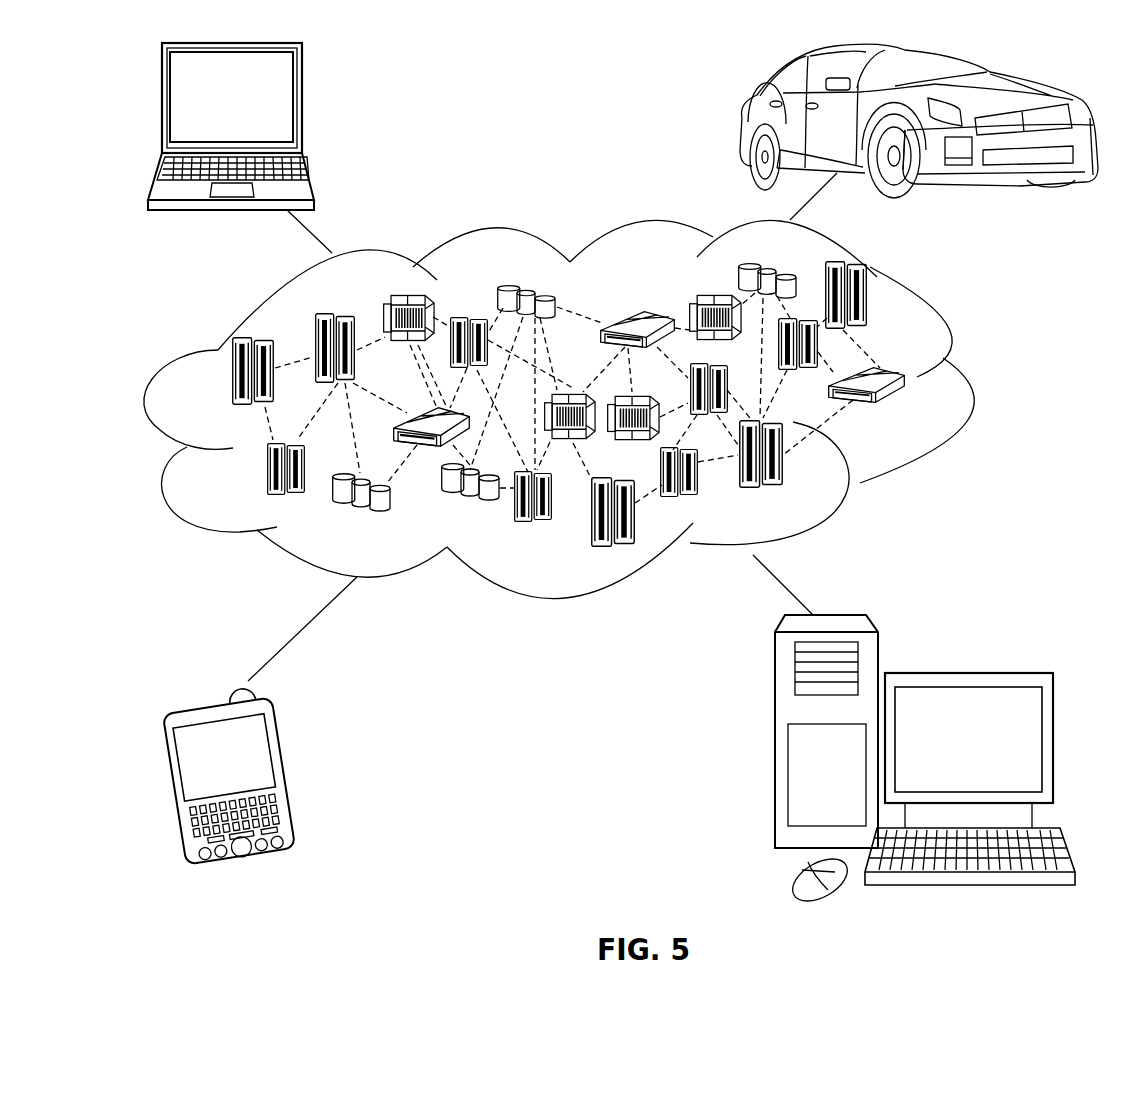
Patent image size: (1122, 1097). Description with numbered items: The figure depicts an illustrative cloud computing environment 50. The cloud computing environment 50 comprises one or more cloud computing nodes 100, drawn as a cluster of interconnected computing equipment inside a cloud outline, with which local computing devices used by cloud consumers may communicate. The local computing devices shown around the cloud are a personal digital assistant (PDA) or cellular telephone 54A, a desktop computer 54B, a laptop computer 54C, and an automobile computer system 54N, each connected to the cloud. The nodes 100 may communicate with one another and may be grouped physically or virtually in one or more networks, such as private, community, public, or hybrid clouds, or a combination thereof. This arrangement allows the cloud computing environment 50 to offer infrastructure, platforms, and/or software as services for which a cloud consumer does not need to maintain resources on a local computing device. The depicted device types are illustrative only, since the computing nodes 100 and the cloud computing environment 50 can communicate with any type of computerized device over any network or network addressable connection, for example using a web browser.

The cloud computing environment 50 is at (965, 385).
The cloud computing nodes 100 is at (910, 415).
The personal digital assistant (PDA) or cellular telephone 54A is at (290, 768).
The desktop computer 54B is at (967, 673).
The laptop computer 54C is at (303, 107).
The automobile computer system 54N is at (745, 120).